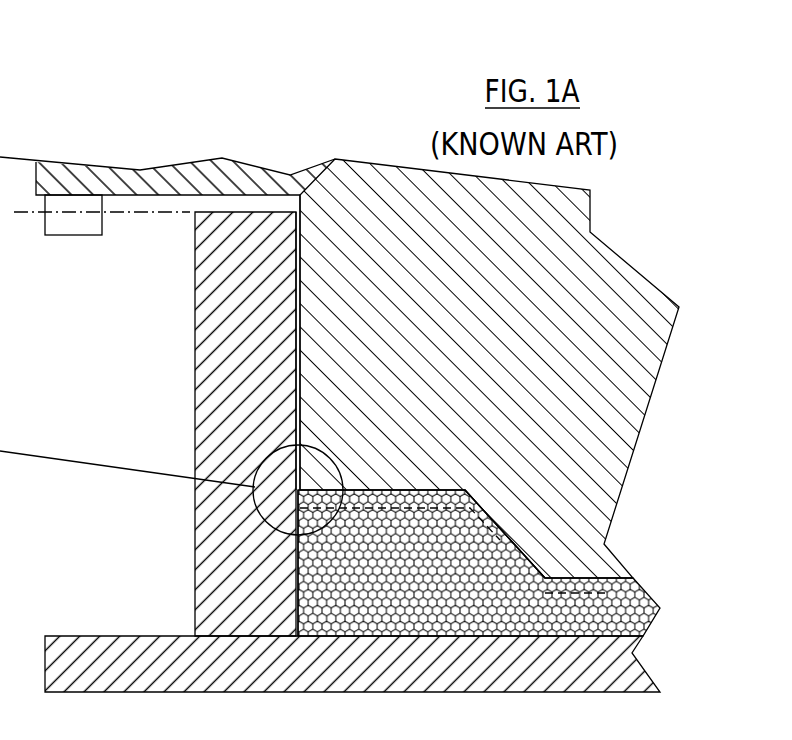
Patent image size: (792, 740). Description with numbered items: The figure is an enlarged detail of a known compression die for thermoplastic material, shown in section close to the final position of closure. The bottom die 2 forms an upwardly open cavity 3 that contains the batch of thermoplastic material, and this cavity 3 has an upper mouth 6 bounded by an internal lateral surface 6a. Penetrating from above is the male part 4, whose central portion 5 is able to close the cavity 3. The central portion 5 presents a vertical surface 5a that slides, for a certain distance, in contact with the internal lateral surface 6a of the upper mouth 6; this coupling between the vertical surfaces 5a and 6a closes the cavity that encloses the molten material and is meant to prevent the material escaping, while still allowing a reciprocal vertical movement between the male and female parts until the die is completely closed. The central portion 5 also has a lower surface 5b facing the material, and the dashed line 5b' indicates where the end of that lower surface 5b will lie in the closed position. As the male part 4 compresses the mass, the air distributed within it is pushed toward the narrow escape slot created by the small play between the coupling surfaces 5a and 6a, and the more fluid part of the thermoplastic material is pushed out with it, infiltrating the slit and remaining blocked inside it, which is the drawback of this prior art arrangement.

The bottom die 2 is at (183, 608).
The cavity 3 is at (480, 548).
The male part 4 is at (652, 268).
The central portion 5 is at (516, 569).
The vertical surface 5a is at (297, 375).
The lower surface 5b is at (212, 563).
The dashed line 5b' is at (347, 554).
The upper mouth 6 is at (233, 226).
The internal lateral surface 6a is at (300, 263).